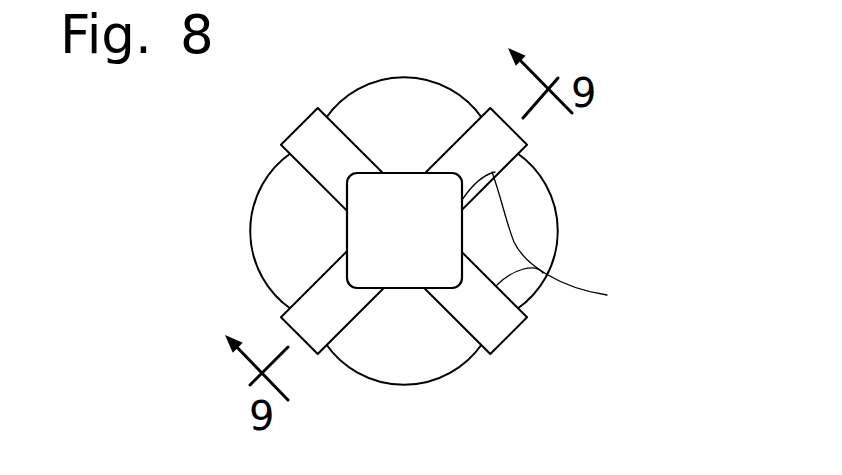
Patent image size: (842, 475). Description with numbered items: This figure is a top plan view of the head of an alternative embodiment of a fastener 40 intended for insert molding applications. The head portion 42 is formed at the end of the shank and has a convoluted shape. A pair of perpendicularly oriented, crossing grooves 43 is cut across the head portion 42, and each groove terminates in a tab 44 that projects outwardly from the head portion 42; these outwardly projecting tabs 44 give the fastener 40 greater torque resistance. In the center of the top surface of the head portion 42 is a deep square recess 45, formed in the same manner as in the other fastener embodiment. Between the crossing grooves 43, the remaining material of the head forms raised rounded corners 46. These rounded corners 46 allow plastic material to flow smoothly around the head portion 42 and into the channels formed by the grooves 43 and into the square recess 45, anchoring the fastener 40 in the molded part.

The fastener 40 is at (190, 215).
The head portion 42 is at (570, 316).
The grooves 43 is at (607, 295).
The tabs 44 is at (292, 138).
The central deep square recess 45 is at (495, 172).
The raised rounded corners 46 is at (403, 78).